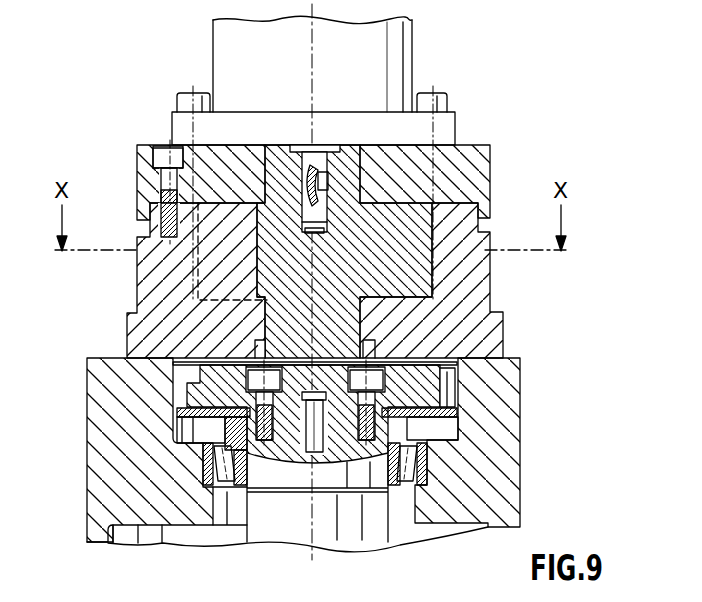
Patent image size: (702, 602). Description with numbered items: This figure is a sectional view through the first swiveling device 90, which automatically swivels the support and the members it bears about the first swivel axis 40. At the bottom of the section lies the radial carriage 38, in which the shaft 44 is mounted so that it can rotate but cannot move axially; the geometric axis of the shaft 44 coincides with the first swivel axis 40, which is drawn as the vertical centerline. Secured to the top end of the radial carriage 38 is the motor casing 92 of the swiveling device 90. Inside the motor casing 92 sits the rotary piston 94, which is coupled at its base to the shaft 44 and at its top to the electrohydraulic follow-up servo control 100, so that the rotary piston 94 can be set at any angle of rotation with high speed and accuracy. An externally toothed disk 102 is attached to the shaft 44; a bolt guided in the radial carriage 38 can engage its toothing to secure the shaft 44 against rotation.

The electrohydraulic follow-up servo control 100 is at (232, 52).
The first swivel axis 40 is at (313, 63).
The first swiveling device 90 is at (553, 306).
The motor casing 92 is at (492, 328).
The rotary piston 94 is at (425, 268).
The externally toothed disk 102 is at (428, 391).
The radial carriage 38 is at (500, 484).
The shaft 44 is at (358, 527).